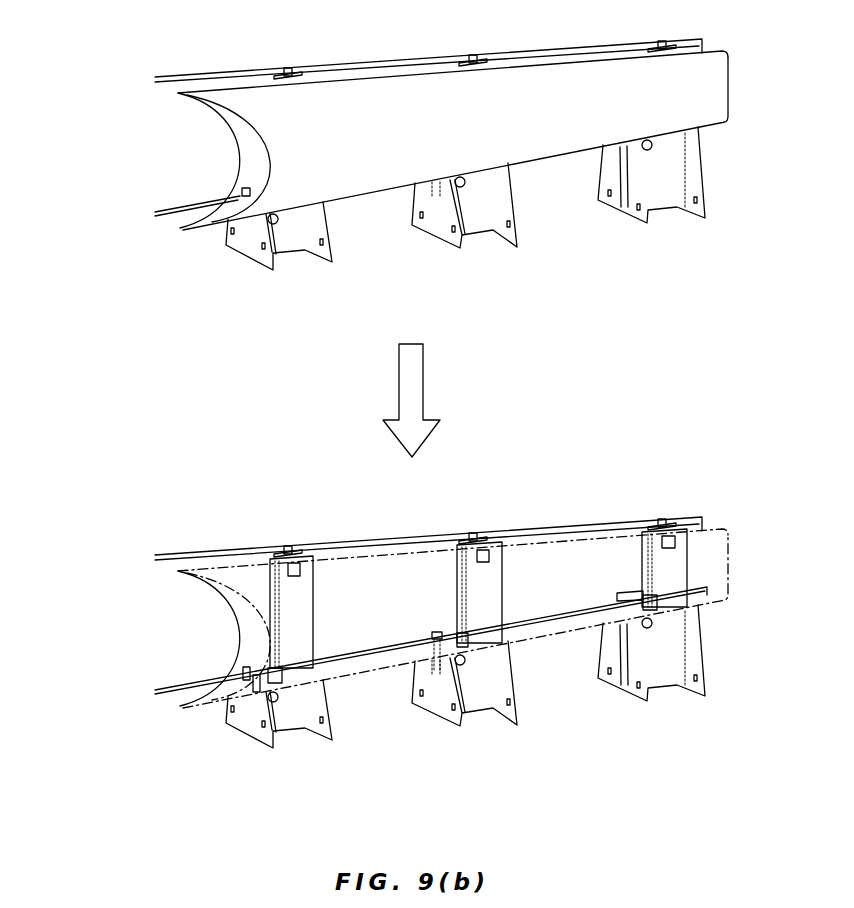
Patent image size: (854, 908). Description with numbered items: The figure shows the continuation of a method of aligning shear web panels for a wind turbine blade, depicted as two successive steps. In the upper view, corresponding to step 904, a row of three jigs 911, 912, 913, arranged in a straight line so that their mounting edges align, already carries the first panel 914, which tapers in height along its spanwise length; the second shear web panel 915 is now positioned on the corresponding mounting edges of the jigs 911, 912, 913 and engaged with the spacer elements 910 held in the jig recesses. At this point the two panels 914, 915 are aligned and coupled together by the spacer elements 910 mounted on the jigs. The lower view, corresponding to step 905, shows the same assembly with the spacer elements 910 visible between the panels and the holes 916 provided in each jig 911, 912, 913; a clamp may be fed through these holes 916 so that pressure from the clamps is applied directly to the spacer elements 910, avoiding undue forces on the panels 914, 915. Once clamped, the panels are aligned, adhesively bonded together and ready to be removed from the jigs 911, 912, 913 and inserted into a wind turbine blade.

The step 904 is at (119, 131).
The step 905 is at (119, 609).
The spacer element 910 is at (285, 74).
The jig 911 is at (300, 282).
The jig 912 is at (488, 258).
The jig 913 is at (669, 232).
The first panel 914 is at (378, 61).
The second shear web panel 915 is at (555, 65).
The hole 916 is at (278, 219).